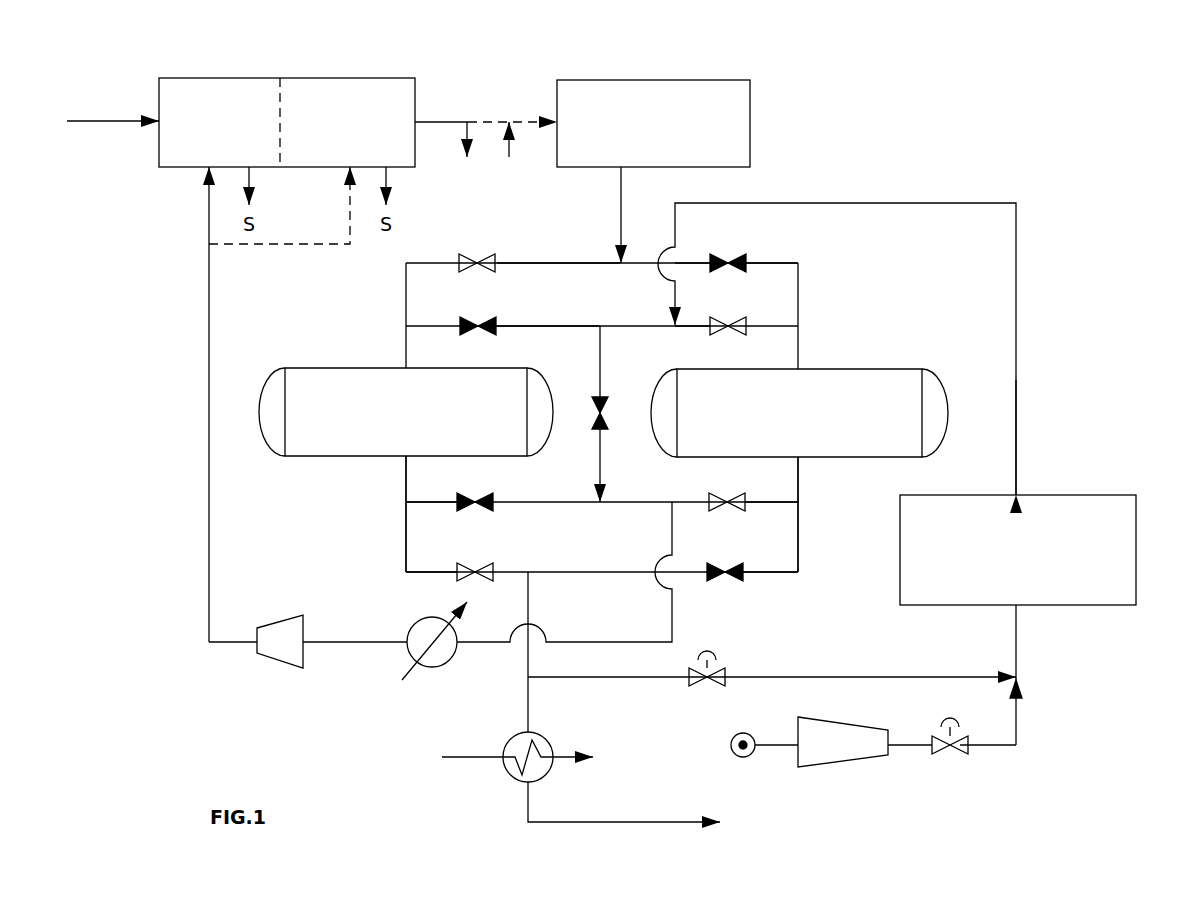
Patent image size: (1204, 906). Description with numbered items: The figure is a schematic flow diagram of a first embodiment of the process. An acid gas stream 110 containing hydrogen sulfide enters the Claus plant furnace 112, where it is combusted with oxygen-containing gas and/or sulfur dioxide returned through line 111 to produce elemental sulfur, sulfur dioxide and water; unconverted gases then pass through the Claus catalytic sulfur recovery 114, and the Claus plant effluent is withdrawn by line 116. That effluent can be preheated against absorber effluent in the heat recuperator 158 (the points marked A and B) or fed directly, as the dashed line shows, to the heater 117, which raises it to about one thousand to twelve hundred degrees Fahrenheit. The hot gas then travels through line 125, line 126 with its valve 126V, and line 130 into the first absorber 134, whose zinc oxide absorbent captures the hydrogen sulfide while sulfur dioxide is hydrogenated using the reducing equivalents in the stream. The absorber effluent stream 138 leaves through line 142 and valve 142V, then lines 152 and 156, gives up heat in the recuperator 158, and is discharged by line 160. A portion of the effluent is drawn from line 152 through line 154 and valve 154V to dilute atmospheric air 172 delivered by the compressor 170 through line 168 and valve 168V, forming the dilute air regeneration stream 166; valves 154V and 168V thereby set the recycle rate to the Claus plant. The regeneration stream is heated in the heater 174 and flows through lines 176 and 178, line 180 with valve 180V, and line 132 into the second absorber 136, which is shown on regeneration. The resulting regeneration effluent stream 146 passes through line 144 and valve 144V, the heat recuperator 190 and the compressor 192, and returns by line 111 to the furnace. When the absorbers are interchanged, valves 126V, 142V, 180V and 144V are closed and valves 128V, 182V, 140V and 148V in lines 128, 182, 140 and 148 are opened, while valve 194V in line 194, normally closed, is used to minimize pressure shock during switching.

The acid gas stream 110 is at (105, 125).
The line 111 is at (272, 243).
The Claus plant furnace 112 is at (159, 112).
The Claus catalytic sulfur recovery 114 is at (417, 112).
The line (Claus plant effluent stream) 116 is at (425, 125).
The heater 117 is at (753, 140).
The line 125 is at (618, 218).
The line 126 is at (515, 262).
The valve 126V is at (492, 253).
The line 128 is at (687, 262).
The valve 128V is at (750, 253).
The line 130 is at (405, 307).
The line 132 is at (800, 285).
The first absorber 134 is at (350, 350).
The second absorber 136 is at (882, 368).
The absorber effluent stream 138 is at (403, 473).
The line 140 is at (418, 503).
The valve 140V is at (485, 495).
The line 142 is at (437, 575).
The valve 142V is at (493, 568).
The line 144 is at (780, 508).
The valve 144V is at (740, 493).
The regeneration effluent stream 146 is at (798, 473).
The line 148 is at (762, 577).
The valve 148V is at (722, 580).
The line 152 is at (527, 662).
The line 154 is at (613, 678).
The valve 154V is at (722, 663).
The line 156 is at (527, 693).
The heat recuperator 158 is at (548, 770).
The line 160 is at (605, 822).
The dilute air regeneration stream 166 is at (1015, 670).
The line 168 is at (1015, 727).
The valve 168V is at (963, 720).
The compressor 170 is at (845, 762).
The atmospheric air 172 is at (768, 742).
The heater 174 is at (1137, 552).
The line (heated regeneration stream) 176 is at (1018, 377).
The line 178 is at (872, 202).
The line 180 is at (680, 330).
The valve 180V is at (737, 317).
The line 182 is at (578, 333).
The valve 182V is at (468, 313).
The heat recuperator 190 is at (407, 652).
The compressor 192 is at (287, 668).
The line 194 is at (602, 445).
The valve 194V is at (608, 398).